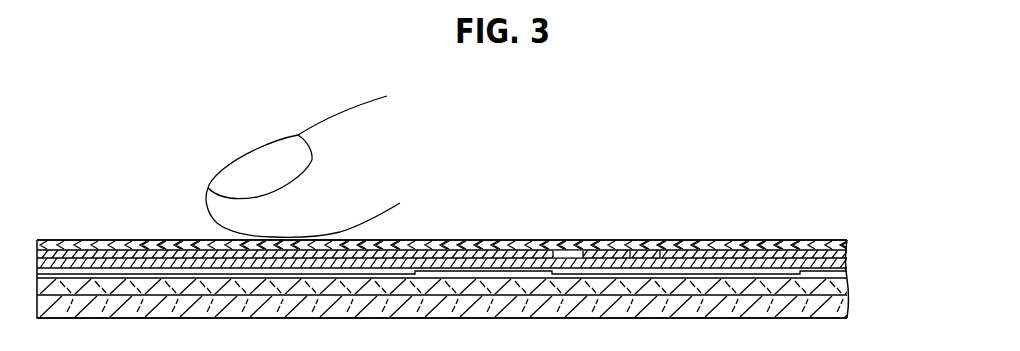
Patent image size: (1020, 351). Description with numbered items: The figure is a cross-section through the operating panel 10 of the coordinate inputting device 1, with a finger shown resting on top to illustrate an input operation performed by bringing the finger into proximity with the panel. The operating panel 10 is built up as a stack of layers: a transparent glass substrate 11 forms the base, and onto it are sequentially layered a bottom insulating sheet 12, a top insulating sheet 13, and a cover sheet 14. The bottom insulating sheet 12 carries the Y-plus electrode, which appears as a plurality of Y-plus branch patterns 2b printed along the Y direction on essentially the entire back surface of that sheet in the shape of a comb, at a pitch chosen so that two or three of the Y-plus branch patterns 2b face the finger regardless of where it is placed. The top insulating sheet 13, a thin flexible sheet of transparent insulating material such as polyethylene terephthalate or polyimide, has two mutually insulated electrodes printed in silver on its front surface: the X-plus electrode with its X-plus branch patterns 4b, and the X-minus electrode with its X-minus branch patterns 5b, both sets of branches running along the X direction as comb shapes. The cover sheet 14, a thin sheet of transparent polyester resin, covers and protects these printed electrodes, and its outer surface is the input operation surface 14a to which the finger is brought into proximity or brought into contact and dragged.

The coordinate inputting device 1 is at (476, 188).
The operating panel 10 is at (905, 227).
The transparent glass substrate 11 is at (833, 302).
The bottom insulating sheet 12 is at (833, 282).
The top insulating sheet 13 is at (838, 263).
The cover sheet 14 is at (847, 243).
The input operation surface 14a is at (141, 229).
The X+ branch pattern 4b is at (578, 246).
The X− branch pattern 5b is at (645, 254).
The Y+ branch pattern 2b is at (718, 276).